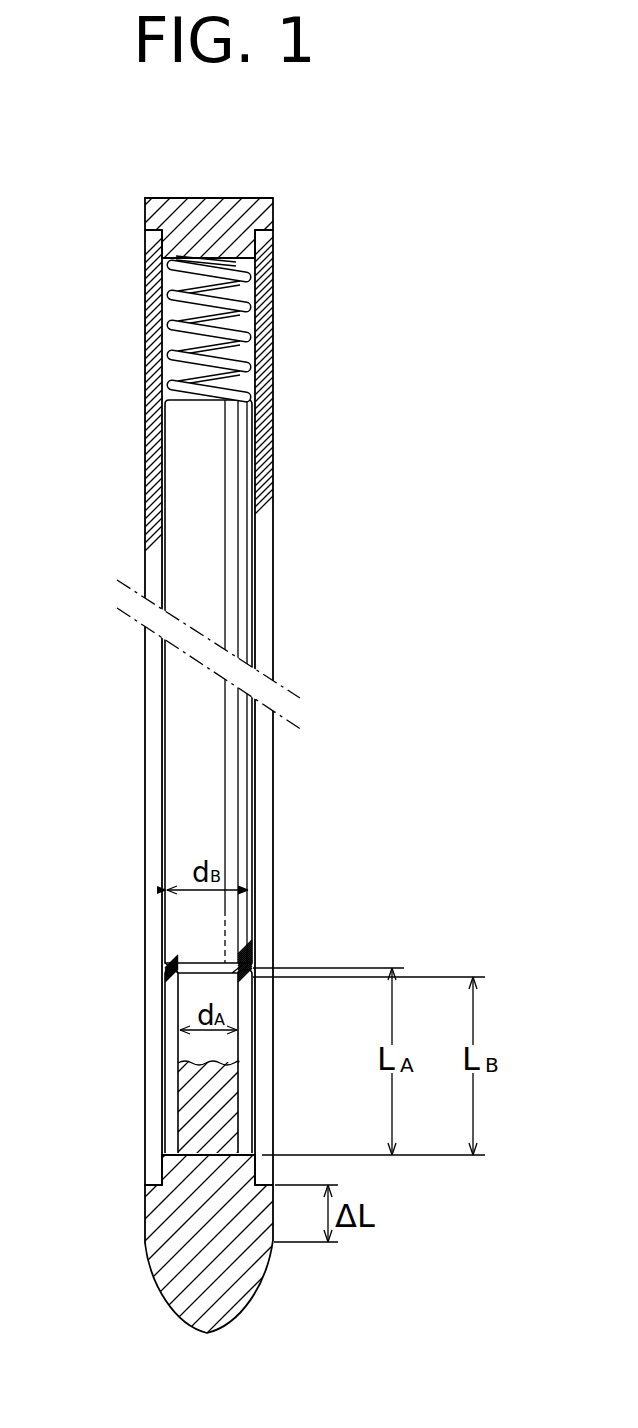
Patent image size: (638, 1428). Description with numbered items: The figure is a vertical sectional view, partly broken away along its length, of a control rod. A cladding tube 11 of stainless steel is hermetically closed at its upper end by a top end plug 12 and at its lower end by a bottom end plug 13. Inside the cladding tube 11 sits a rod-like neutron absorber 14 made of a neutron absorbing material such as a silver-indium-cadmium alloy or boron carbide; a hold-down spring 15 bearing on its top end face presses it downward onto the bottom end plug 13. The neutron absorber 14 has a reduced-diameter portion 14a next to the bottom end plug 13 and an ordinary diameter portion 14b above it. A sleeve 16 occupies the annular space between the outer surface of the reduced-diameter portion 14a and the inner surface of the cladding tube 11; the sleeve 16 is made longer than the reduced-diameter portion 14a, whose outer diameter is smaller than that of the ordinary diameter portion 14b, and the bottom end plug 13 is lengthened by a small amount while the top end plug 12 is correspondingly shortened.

The cladding tube 11 is at (265, 523).
The top end plug 12 is at (216, 205).
The bottom end plug 13 is at (252, 1265).
The neutron absorber 14 is at (243, 852).
The reduced-diameter portion 14a is at (223, 1047).
The ordinary diameter portion 14b is at (240, 622).
The hold-down spring 15 is at (245, 335).
The sleeve 16 is at (172, 1042).